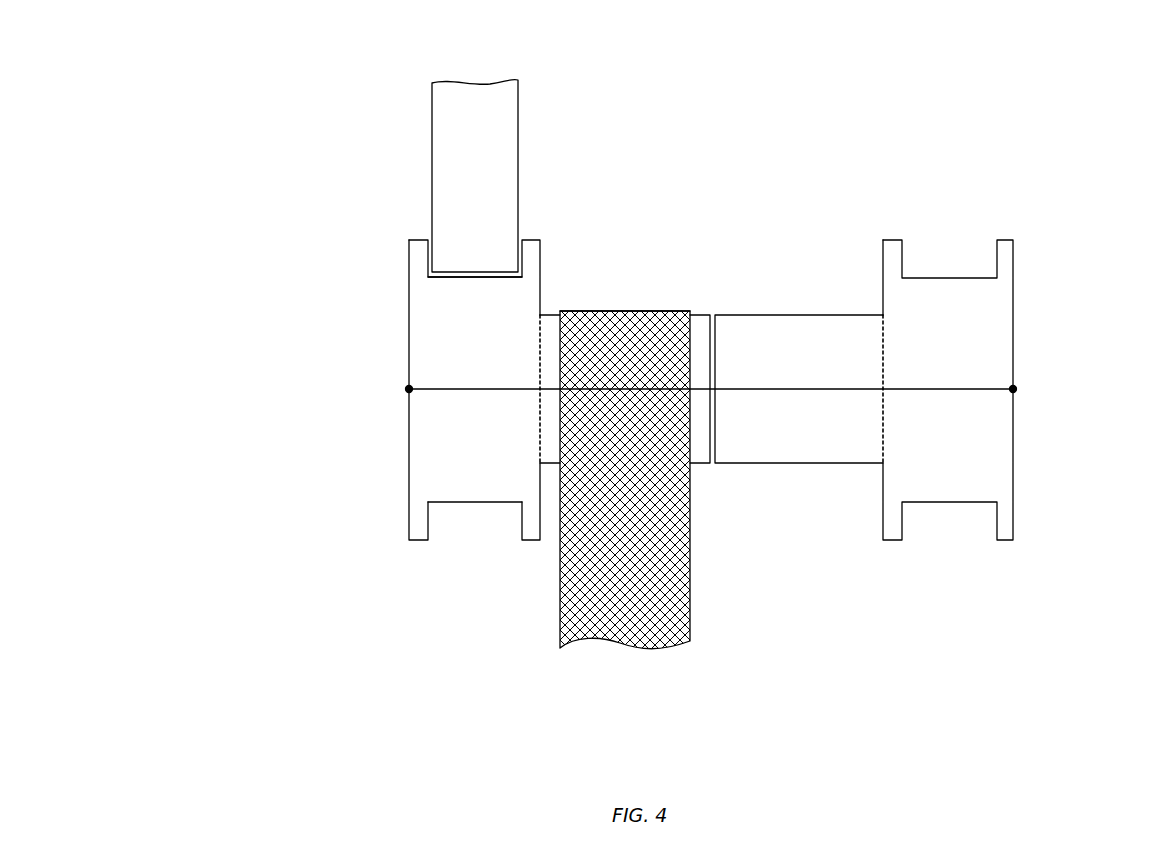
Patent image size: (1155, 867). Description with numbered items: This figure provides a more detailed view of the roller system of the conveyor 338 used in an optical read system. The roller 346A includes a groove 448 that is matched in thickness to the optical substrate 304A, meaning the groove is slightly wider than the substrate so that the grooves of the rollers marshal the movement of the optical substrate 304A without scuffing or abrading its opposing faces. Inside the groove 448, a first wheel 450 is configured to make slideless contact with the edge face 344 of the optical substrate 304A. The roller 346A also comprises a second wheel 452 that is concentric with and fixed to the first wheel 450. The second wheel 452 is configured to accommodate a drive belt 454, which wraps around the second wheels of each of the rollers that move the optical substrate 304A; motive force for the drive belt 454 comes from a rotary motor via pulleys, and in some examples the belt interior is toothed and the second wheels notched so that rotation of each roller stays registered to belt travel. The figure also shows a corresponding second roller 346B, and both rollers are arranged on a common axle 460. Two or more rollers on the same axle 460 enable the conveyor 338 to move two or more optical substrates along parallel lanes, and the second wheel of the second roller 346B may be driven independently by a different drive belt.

The conveyor 338 is at (1106, 120).
The optical substrate 304A is at (475, 175).
The roller 346A is at (708, 215).
The second roller 346B is at (1013, 215).
The edge face 344 is at (470, 262).
The first wheel 450 is at (409, 280).
The groove 448 is at (482, 540).
The second wheel 452 is at (550, 311).
The drive belt 454 is at (690, 565).
The axle 460 is at (783, 391).